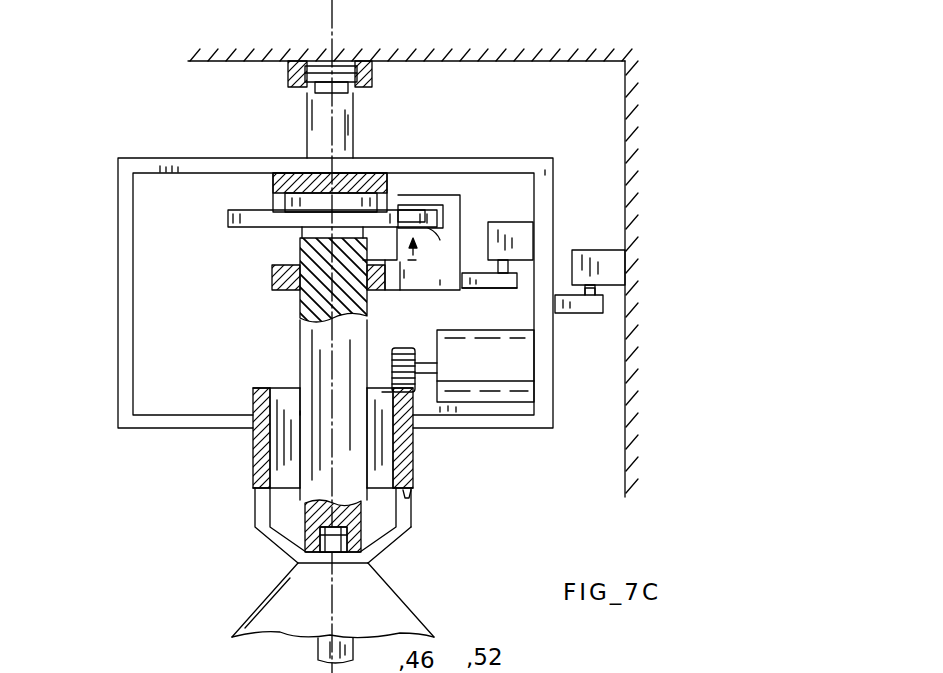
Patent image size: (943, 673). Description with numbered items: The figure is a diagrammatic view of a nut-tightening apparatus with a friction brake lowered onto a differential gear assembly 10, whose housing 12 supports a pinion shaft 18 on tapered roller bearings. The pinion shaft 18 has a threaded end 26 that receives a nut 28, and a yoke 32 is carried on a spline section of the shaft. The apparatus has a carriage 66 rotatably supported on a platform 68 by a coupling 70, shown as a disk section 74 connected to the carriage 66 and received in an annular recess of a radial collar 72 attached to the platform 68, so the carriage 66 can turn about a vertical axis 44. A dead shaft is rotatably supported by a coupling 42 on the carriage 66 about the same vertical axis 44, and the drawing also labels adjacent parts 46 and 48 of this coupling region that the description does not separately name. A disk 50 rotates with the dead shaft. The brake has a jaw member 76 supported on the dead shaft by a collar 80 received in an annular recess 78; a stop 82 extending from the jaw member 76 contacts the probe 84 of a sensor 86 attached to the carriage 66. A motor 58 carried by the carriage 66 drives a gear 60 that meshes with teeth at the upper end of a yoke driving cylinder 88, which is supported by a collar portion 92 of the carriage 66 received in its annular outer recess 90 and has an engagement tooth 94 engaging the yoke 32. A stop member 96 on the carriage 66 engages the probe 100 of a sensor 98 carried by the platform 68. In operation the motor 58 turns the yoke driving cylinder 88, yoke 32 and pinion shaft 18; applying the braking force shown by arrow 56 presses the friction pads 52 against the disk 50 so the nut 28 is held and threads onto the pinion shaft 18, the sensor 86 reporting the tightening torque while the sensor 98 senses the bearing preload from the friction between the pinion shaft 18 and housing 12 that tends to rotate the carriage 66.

The differential gear assembly 10 is at (272, 572).
The housing 12 is at (277, 600).
The pinion shaft 18 is at (317, 648).
The threaded end 26 is at (262, 530).
The nut 28 is at (360, 548).
The yoke 32 is at (413, 529).
The coupling 42 is at (250, 184).
The vertical axis 44 is at (332, 20).
The bearing 46 is at (313, 198).
The bearing block 48 is at (363, 182).
The disk 50 is at (228, 217).
The friction pads 52 is at (415, 215).
The braking force arrow 56 is at (410, 262).
The motor 58 is at (523, 358).
The gear 60 is at (540, 392).
The carriage 66 is at (118, 178).
The platform 68 is at (208, 64).
The coupling 70 is at (272, 76).
The radial collar 72 is at (372, 72).
The disk section 74 is at (338, 64).
The jaw member 76 is at (443, 248).
The annular recess 78 is at (300, 300).
The collar 80 is at (272, 272).
The stop 82 is at (493, 288).
The probe 84 is at (533, 273).
The sensor 86 is at (523, 228).
The yoke driving cylinder 88 is at (417, 463).
The annular outer recess 90 is at (245, 428).
The collar portion 92 is at (412, 420).
The engagement tooth 94 is at (412, 492).
The stop member 96 is at (593, 313).
The sensor 98 is at (600, 258).
The probe 100 is at (597, 290).